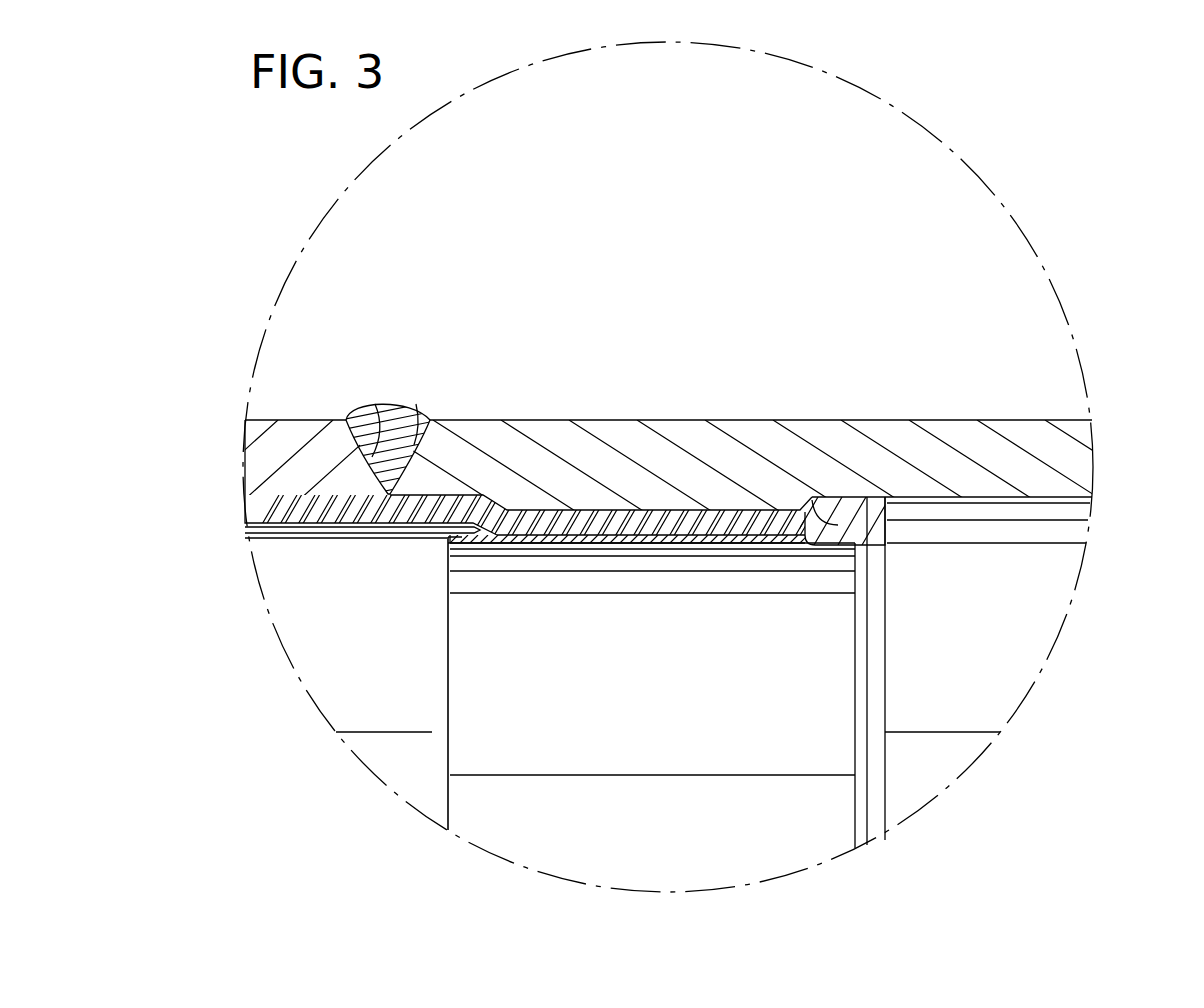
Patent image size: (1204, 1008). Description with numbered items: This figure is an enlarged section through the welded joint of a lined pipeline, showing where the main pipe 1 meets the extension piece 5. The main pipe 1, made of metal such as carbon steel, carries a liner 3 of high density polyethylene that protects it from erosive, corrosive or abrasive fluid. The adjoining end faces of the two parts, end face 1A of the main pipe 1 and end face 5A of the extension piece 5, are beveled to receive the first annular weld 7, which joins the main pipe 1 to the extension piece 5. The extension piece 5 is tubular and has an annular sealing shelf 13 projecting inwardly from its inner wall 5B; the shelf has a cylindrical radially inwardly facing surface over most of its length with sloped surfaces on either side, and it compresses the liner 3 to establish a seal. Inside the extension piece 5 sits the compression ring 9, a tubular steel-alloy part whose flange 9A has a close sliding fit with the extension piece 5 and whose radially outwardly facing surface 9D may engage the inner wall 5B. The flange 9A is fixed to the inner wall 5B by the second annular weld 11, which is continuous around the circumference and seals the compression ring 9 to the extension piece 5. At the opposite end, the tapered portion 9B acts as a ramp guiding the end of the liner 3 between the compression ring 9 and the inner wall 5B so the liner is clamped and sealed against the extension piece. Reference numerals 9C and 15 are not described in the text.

The main pipe 1 is at (277, 412).
The end face of main pipe 1A is at (376, 406).
The liner 3 is at (298, 532).
The extension piece 5 is at (1041, 410).
The end face of extension piece 5A is at (416, 404).
The inner wall of extension piece 5B is at (992, 495).
The first annular weld 7 is at (393, 403).
The compression ring 9 is at (880, 524).
The flange 9A is at (846, 497).
The tapered portion 9B is at (447, 536).
The recess of housing member 9C is at (707, 508).
The radially outwardly facing surface 9D is at (858, 497).
The second annular weld 11 is at (880, 622).
The sealing shelf 13 is at (607, 505).
The sealing layer 15 is at (672, 536).